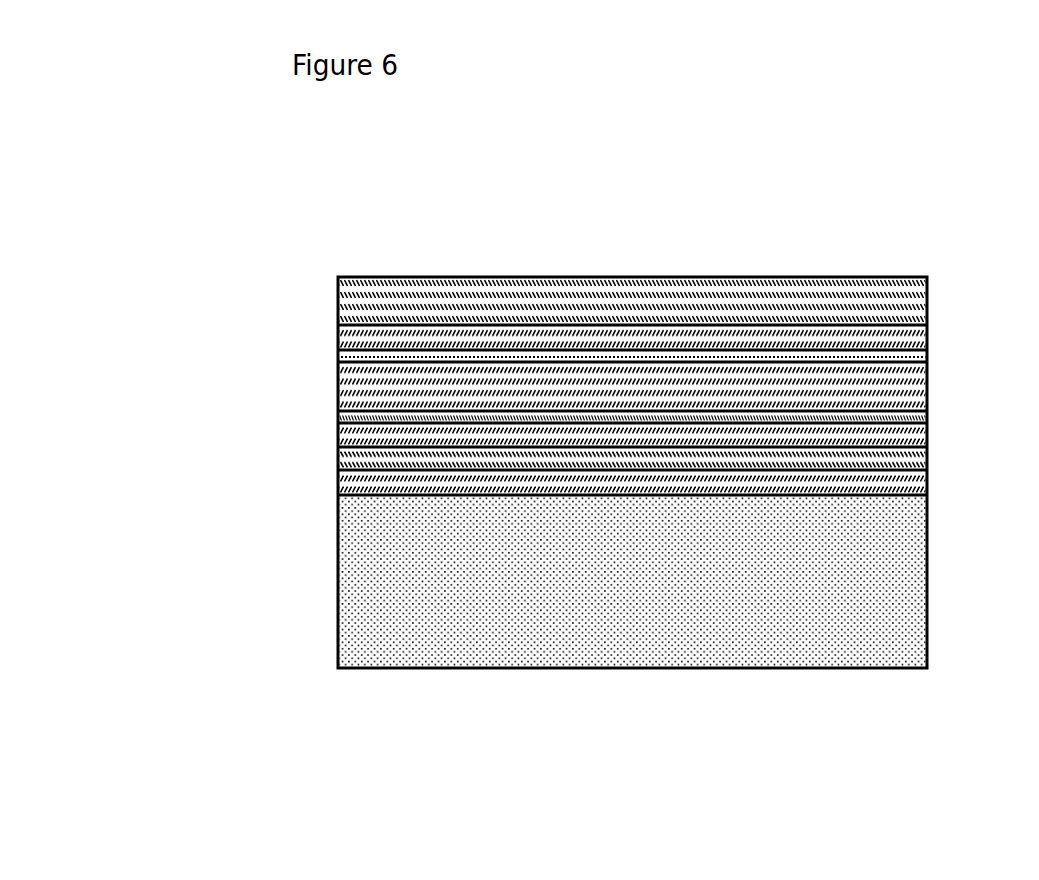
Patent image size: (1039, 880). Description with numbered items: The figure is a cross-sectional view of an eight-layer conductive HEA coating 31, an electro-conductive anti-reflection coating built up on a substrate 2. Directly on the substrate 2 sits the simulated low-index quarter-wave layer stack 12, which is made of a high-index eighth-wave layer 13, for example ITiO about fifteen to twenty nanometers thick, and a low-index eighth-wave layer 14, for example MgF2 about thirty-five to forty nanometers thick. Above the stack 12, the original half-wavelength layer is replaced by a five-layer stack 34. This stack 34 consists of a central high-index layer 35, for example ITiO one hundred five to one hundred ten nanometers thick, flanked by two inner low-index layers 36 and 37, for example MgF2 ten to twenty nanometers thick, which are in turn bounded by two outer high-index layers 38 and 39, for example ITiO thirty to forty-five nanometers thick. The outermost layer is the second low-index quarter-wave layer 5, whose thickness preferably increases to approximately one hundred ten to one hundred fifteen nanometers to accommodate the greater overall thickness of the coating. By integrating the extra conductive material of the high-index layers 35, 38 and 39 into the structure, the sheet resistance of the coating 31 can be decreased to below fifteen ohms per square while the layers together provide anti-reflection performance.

The eight-layer conductive HEA coating 31 is at (652, 225).
The second low-index quarter-wave layer 5 is at (928, 292).
The outer high-index layer 38 is at (337, 340).
The inner low-index layer 36 is at (337, 358).
The central high-index layer 35 is at (337, 385).
The inner low-index layer 37 is at (337, 417).
The outer high-index layer 39 is at (337, 438).
The low-index eighth-wave layer 14 is at (337, 462).
The high-index eighth-wave layer 13 is at (337, 487).
The substrate 2 is at (685, 620).
The five-layer stack 34 is at (938, 326).
The simulated low-index quarter-wave layer stack 12 is at (962, 449).